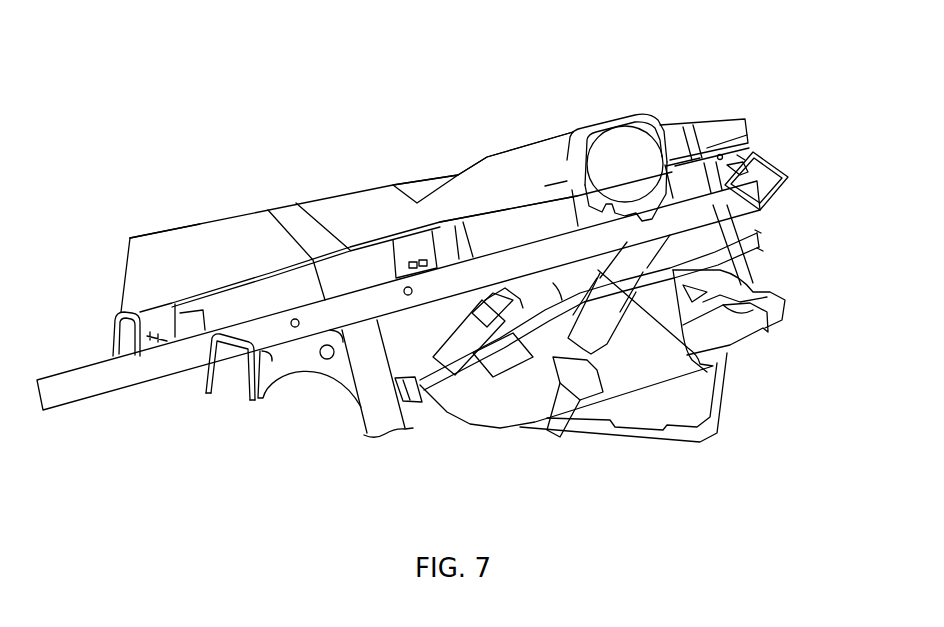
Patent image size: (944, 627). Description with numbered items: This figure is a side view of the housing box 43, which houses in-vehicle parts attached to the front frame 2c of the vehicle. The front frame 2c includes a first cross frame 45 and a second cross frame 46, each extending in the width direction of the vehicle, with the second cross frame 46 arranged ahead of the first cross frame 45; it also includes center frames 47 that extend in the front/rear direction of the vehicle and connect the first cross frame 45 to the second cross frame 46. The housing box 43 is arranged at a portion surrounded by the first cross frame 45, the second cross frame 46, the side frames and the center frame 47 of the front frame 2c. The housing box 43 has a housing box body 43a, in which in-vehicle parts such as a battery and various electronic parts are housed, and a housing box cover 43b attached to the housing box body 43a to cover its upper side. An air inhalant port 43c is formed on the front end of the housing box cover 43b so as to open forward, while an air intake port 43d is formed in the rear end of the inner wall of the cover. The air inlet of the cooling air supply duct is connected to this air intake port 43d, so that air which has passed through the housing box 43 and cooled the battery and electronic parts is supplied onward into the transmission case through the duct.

The front frame 2c is at (90, 402).
The housing box 43 is at (388, 182).
The housing box body 43a is at (483, 422).
The housing box cover 43b is at (516, 138).
The air inhalant port 43c is at (125, 280).
The air intake port 43d is at (658, 143).
The first cross frame 45 is at (790, 171).
The second cross frame 46 is at (203, 378).
The center frame 47 is at (82, 365).